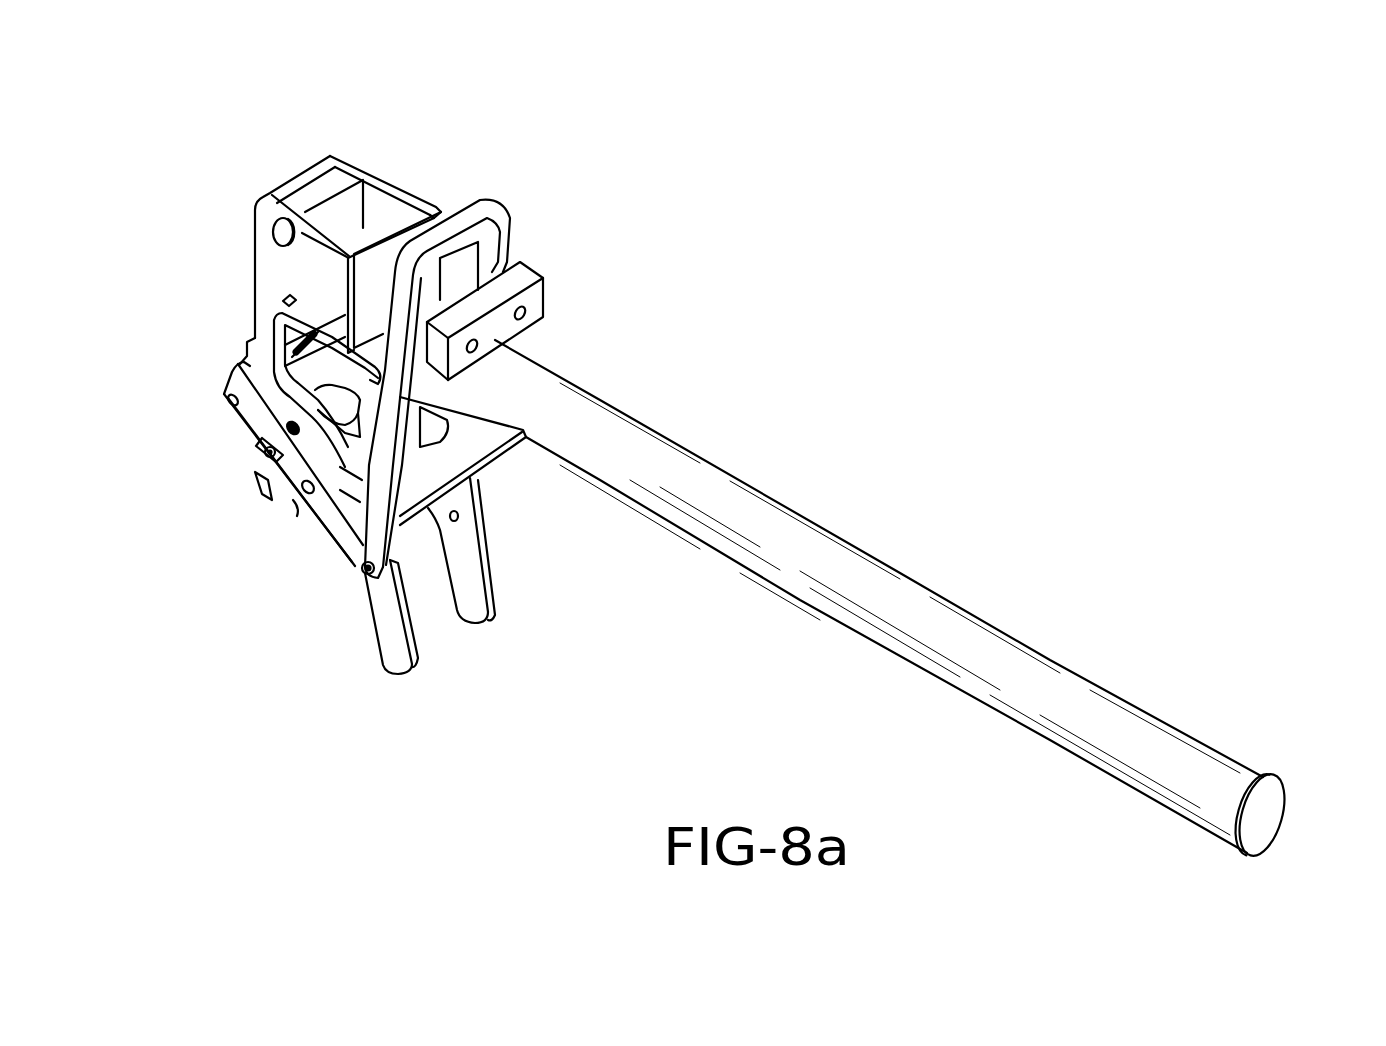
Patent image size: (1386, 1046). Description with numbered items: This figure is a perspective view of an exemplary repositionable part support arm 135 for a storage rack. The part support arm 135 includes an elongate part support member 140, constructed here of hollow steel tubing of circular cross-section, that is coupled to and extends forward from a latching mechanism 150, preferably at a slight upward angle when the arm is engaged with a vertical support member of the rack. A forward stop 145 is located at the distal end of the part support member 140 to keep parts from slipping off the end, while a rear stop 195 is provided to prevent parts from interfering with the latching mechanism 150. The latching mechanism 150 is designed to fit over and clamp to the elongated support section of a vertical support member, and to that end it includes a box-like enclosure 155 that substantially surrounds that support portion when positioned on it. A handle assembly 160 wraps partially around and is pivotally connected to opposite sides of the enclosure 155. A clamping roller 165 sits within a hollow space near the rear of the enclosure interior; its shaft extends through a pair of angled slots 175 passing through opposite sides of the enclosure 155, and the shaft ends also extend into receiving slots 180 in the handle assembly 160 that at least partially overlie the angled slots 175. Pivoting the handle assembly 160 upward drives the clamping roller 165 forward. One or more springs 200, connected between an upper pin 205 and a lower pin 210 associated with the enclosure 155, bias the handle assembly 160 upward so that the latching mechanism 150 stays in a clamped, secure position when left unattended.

The repositionable part support arm 135 is at (940, 553).
The part support member 140 is at (933, 620).
The forward stop 145 is at (1263, 817).
The latching mechanism 150 is at (255, 154).
The box-like enclosure 155 is at (385, 154).
The handle assembly 160 is at (340, 413).
The clamping roller 165 is at (297, 508).
The angled slots 175 is at (266, 488).
The receiving slots 180 is at (265, 447).
The rear stop 195 is at (535, 303).
The springs 200 is at (300, 352).
The upper bolt or pin 205 is at (287, 298).
The lower bolt or pin 210 is at (230, 402).